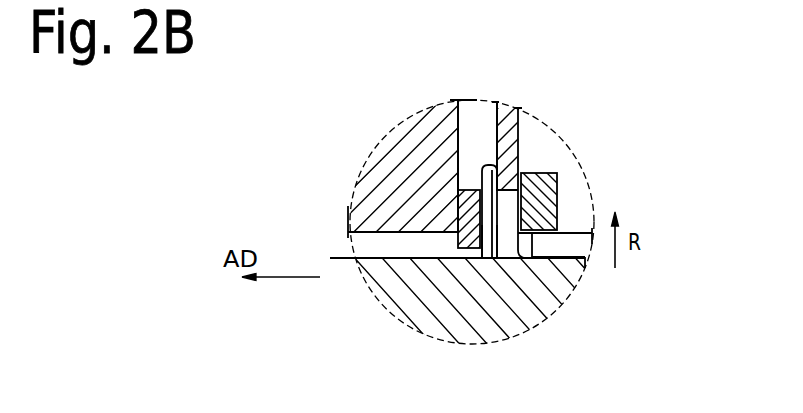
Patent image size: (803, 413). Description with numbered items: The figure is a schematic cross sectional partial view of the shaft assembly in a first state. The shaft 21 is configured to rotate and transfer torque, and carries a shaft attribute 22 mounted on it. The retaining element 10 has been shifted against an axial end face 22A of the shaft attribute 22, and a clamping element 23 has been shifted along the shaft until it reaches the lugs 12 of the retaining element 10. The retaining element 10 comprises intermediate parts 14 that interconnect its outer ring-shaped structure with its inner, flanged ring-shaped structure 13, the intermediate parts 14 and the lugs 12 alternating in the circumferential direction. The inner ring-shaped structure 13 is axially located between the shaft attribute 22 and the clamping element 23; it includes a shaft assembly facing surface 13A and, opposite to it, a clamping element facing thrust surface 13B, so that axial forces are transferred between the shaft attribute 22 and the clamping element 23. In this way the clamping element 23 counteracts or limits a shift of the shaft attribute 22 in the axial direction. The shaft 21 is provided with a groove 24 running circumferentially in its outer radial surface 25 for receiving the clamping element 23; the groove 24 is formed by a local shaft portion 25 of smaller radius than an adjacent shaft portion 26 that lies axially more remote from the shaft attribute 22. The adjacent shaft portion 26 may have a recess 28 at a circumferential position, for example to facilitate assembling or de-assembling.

The retaining element 10 is at (540, 120).
The lugs 12 is at (505, 168).
The inner ring-shaped structure 13 is at (467, 250).
The shaft assembly facing surface 13A is at (445, 223).
The clamping element facing thrust surface 13B is at (503, 233).
The intermediate parts 14 is at (478, 150).
The shaft 21 is at (531, 300).
The shaft attribute 22 is at (389, 178).
The axial end face 22A is at (446, 185).
The clamping element 23 is at (540, 190).
The groove 24 is at (513, 258).
The outer radial surface 25 is at (407, 259).
The adjacent shaft portion 26 is at (592, 230).
The recess 28 is at (578, 260).